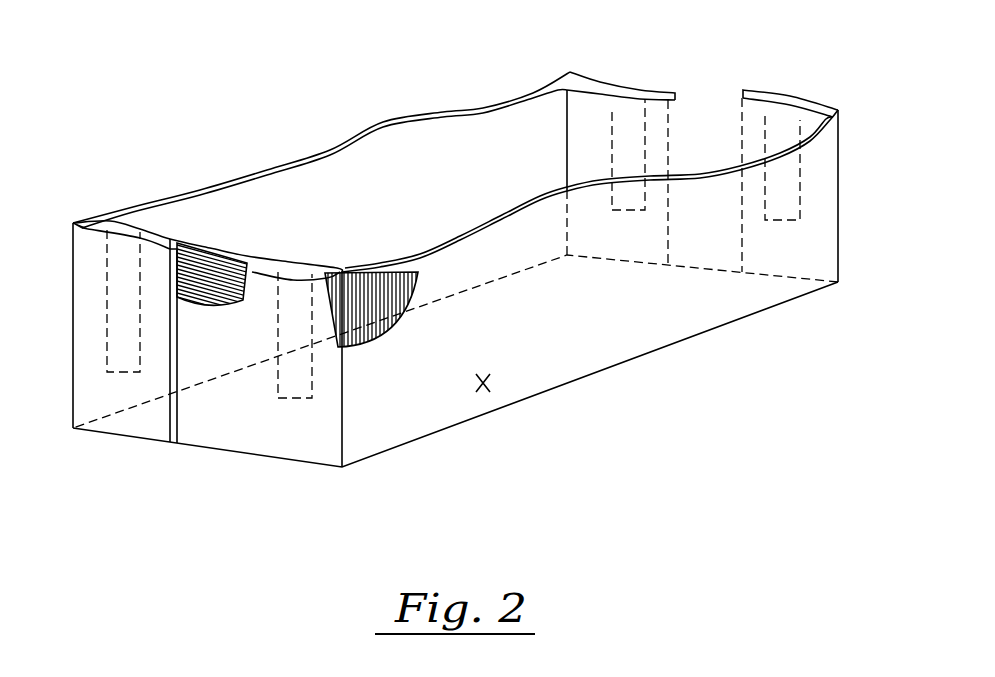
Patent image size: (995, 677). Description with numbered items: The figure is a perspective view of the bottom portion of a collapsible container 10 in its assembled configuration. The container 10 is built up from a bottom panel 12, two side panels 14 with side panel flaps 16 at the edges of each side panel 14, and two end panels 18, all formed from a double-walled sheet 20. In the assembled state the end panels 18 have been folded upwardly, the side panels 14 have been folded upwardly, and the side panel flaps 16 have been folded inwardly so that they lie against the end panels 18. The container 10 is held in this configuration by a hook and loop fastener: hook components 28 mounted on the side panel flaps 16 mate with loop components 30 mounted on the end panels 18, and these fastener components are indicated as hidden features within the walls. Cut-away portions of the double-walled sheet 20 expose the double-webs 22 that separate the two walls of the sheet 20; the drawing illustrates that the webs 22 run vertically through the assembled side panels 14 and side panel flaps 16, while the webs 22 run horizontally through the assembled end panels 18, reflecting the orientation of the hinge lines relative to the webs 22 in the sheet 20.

The collapsible container 10 is at (555, 425).
The bottom panel 12 is at (603, 367).
The side panels 14 is at (370, 163).
The side panel flaps 16 is at (85, 307).
The end panels 18 is at (207, 422).
The double-walled sheet 20 is at (490, 387).
The double-webs 22 is at (203, 253).
The hook components 28 is at (137, 375).
The loop components 30 is at (453, 249).